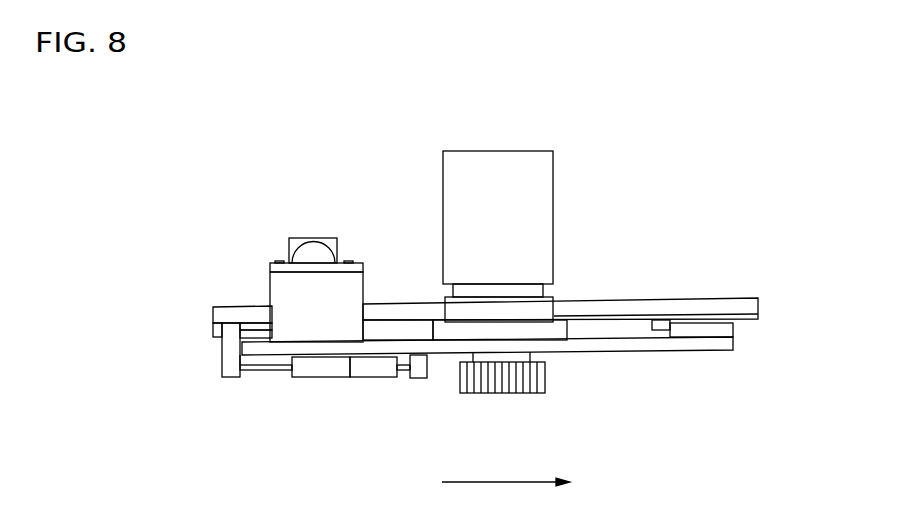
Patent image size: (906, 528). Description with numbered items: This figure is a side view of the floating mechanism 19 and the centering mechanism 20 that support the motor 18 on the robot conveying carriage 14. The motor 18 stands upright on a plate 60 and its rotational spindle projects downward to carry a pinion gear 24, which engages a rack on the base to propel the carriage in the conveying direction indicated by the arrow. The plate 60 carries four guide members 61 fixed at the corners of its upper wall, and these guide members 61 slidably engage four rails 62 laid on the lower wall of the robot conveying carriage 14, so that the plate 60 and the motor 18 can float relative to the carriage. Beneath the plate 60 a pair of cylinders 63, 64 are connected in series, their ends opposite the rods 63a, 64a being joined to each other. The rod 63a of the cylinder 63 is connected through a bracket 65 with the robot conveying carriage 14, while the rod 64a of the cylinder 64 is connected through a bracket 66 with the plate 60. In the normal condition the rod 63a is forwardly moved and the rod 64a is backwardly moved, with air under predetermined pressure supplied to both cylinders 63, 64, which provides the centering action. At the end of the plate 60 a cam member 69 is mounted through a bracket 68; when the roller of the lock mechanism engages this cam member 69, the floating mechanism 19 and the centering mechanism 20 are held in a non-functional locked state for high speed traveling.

The robot conveying carriage 14 is at (725, 298).
The motor 18 is at (553, 165).
The floating mechanism 19 is at (590, 251).
The centering mechanism 20 is at (639, 244).
The pinion gear 24 is at (527, 393).
The plate 60 is at (635, 347).
The guide members 61 is at (243, 337).
The rails 62 is at (212, 331).
The cylinder 63 is at (317, 377).
The rod 63a is at (260, 370).
The cylinder 64 is at (368, 377).
The rod 64a is at (402, 370).
The bracket 65 is at (222, 376).
The bracket 66 is at (310, 239).
The bracket 68 is at (365, 283).
The cam member 69 is at (357, 262).